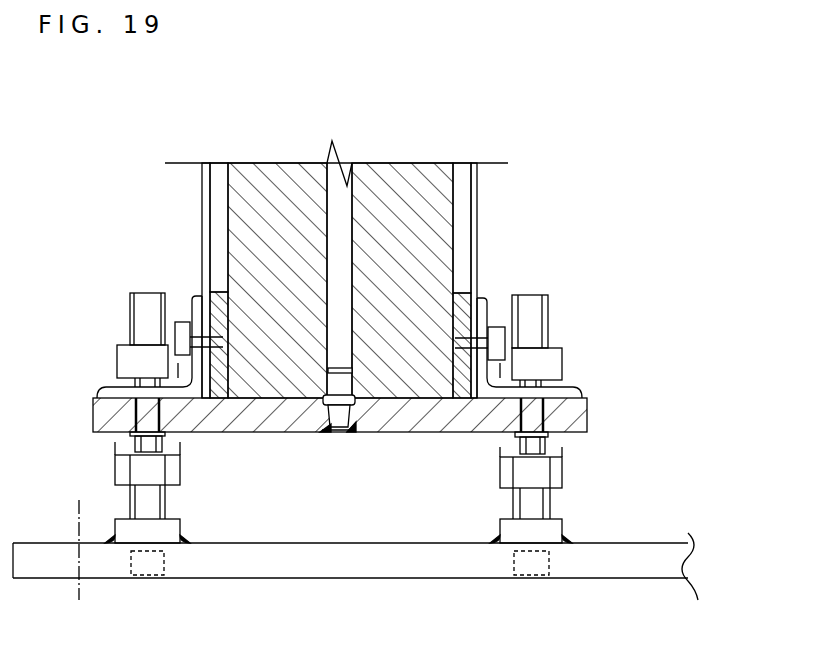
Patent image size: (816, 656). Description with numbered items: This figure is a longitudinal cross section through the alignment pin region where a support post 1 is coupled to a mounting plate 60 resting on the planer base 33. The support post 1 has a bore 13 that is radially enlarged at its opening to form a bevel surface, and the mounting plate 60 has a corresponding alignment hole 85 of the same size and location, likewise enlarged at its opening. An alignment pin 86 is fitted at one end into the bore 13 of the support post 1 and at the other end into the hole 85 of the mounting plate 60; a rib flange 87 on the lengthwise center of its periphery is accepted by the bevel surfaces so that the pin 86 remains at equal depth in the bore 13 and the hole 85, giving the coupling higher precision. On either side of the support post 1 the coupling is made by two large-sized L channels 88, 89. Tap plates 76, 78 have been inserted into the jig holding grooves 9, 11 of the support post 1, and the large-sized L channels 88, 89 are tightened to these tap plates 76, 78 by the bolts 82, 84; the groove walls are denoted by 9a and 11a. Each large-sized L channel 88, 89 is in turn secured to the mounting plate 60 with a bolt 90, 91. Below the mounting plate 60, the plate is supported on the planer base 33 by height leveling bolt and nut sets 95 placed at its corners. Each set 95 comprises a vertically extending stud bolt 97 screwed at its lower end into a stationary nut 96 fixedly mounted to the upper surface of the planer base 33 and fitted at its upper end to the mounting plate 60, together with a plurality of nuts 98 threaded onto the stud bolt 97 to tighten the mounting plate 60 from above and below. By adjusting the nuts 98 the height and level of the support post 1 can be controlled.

The support post 1 is at (426, 178).
The jig holding groove 9 is at (217, 190).
The side plate 9a is at (203, 221).
The jig holding groove 11 is at (503, 215).
The side plate 11a is at (476, 216).
The bore 13 is at (363, 261).
The planer base 33 is at (638, 563).
The mounting plate 60 is at (425, 428).
The tap plate 76 is at (218, 395).
The tap plate 78 is at (463, 398).
The bolt 82 is at (176, 342).
The bolt 84 is at (503, 346).
The alignment hole 85 is at (323, 434).
The alignment pin 86 is at (340, 408).
The rib flange 87 is at (353, 430).
The large-sized L channel 88 is at (191, 299).
The large-sized L channel 89 is at (483, 315).
The bolt 90 is at (133, 434).
The bolt 91 is at (570, 443).
The height leveling bolt and nut set 95 is at (112, 476).
The stationary nut 96 is at (535, 538).
The stud bolt 97 is at (533, 310).
The nut 98 is at (567, 424).